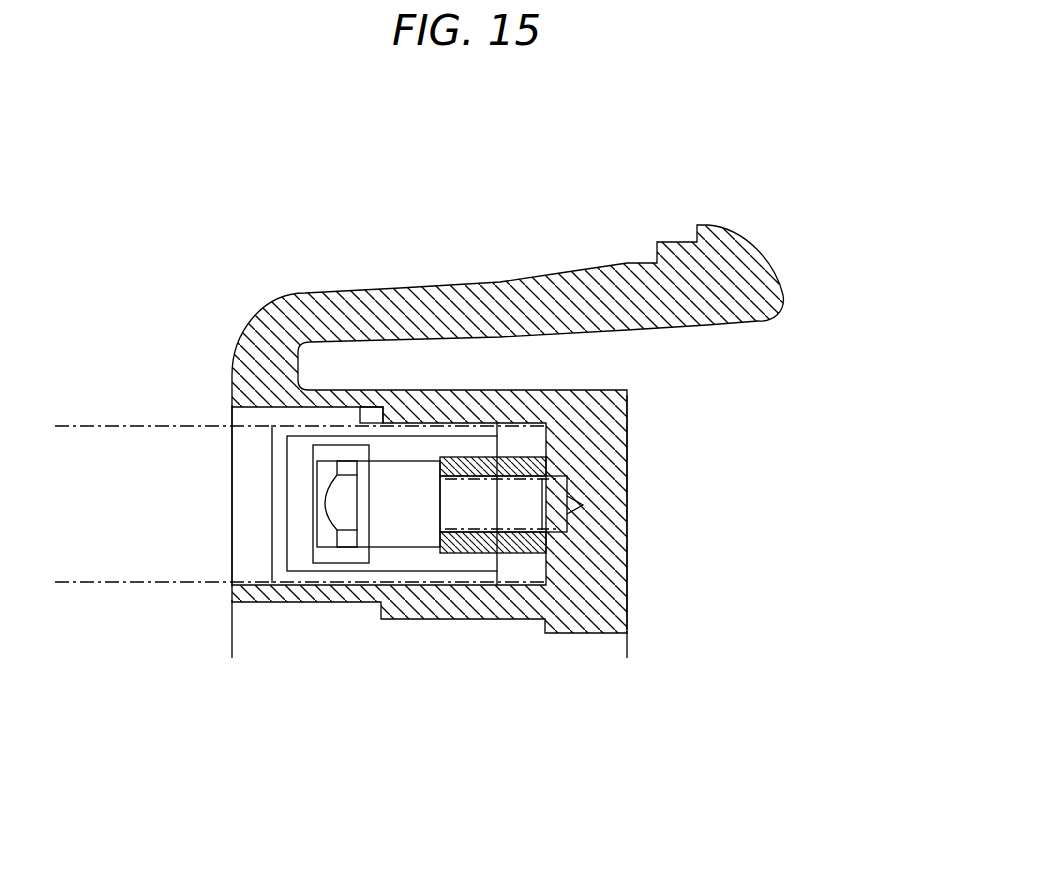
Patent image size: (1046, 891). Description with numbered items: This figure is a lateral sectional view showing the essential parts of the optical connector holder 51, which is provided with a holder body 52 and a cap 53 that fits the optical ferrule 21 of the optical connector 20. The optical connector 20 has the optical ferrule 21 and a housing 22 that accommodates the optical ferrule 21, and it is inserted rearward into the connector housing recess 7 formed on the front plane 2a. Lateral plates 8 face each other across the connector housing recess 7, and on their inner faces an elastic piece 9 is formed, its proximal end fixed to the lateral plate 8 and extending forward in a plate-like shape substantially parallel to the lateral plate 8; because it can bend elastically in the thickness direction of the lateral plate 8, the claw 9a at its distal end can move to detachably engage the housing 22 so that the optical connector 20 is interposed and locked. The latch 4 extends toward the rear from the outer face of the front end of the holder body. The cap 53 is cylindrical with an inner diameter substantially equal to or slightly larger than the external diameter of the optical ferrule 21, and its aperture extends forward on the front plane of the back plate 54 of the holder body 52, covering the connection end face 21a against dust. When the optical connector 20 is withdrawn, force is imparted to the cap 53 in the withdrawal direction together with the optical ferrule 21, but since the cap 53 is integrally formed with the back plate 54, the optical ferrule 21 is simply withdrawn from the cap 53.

The optical connector holder 51 is at (609, 231).
The latch 4 is at (478, 282).
The holder body 52 is at (628, 393).
The back plate 54 is at (627, 447).
The front plane 2a is at (232, 640).
The optical connector 20 is at (163, 425).
The housing 22 is at (167, 582).
The connector housing recess 7 is at (247, 490).
The lateral plate 8 is at (247, 522).
The elastic piece 9 is at (390, 535).
The claw 9a is at (345, 542).
The cap 53 is at (462, 468).
The optical ferrule 21 is at (590, 498).
The connection end face 21a is at (585, 512).